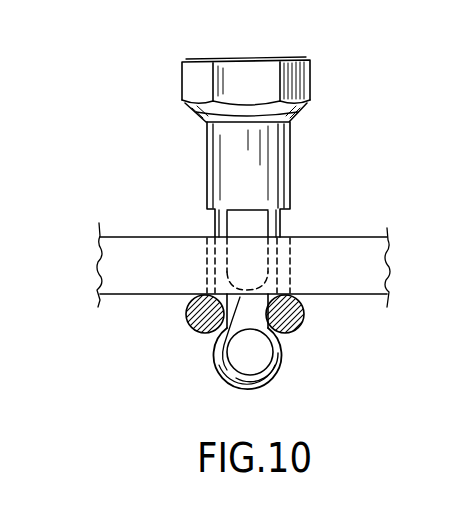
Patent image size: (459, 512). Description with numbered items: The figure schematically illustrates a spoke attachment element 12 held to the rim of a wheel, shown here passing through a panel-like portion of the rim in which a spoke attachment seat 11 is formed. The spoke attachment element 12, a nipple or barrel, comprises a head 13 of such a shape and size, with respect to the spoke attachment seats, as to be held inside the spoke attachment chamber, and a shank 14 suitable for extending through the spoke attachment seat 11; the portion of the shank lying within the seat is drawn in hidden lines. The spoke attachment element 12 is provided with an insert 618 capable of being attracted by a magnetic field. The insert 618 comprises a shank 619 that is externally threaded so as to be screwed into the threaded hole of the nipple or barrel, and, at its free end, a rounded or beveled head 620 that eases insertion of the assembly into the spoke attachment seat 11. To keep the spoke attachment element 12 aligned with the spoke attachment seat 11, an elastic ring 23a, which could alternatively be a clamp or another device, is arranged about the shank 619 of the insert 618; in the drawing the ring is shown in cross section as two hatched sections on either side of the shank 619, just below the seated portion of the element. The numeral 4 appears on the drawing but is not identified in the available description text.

The panel / plate 4 is at (123, 243).
The spoke attachment seat 11 is at (296, 259).
The spoke attachment element 12 is at (196, 125).
The head 13 is at (195, 80).
The shank 14 is at (277, 152).
The elastic ring 23a is at (308, 322).
The insert 618 is at (221, 354).
The shank 619 is at (223, 376).
The rounded or beveled head 620 is at (280, 368).